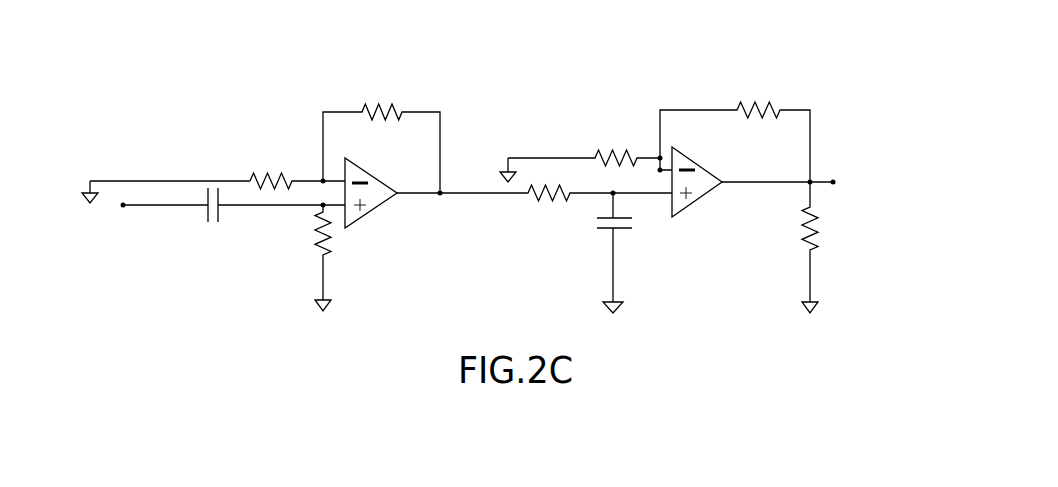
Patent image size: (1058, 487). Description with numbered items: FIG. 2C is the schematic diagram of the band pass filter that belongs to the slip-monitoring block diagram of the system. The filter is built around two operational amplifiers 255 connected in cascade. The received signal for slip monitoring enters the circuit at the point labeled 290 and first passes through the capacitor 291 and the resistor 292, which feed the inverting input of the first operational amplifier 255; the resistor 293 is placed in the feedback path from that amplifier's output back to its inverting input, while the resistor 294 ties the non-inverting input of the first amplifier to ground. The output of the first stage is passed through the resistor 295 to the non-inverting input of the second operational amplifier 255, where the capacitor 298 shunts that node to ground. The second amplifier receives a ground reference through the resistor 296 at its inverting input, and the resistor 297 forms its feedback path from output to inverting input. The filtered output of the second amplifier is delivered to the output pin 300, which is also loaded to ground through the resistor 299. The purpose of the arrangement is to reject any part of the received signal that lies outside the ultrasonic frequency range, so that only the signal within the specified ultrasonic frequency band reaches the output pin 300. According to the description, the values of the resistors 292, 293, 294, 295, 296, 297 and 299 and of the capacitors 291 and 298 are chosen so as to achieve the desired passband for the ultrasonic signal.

The operational amplifier 255 is at (370, 213).
The input terminal 290 is at (128, 213).
The capacitor 291 is at (223, 232).
The resistor 292 is at (268, 168).
The resistor 293 is at (392, 95).
The resistor 294 is at (330, 257).
The resistor 295 is at (540, 208).
The resistor 296 is at (605, 69).
The resistor 297 is at (870, 54).
The capacitor 298 is at (635, 232).
The resistor 299 is at (820, 222).
The output pin 300 is at (817, 176).